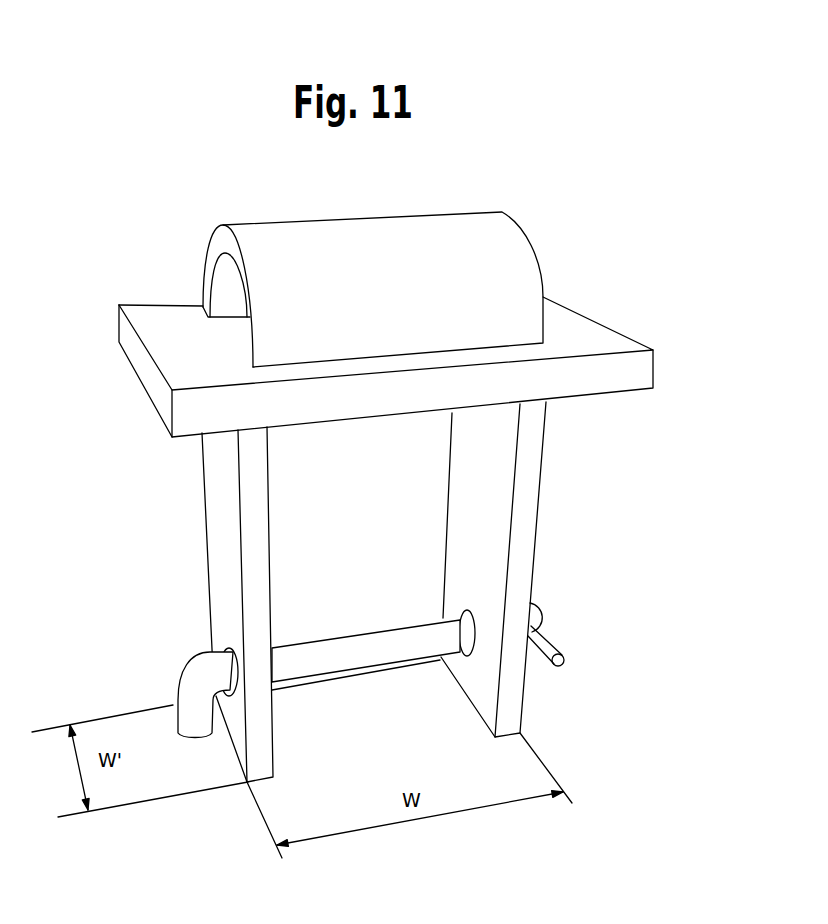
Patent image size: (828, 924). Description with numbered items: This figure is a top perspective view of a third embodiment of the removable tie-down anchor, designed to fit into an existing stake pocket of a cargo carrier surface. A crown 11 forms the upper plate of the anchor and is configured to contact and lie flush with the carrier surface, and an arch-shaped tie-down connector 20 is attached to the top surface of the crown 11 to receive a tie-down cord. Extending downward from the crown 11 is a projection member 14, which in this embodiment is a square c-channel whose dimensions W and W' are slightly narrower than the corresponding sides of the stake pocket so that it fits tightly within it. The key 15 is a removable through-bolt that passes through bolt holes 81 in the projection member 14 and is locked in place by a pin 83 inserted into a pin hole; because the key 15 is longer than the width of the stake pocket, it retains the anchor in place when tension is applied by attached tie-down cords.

The crown 11 is at (603, 323).
The projection member 14 is at (540, 493).
The key 15 is at (184, 671).
The tie-down connector 20 is at (472, 211).
The bolt holes 81 is at (462, 608).
The pin 83 is at (563, 653).